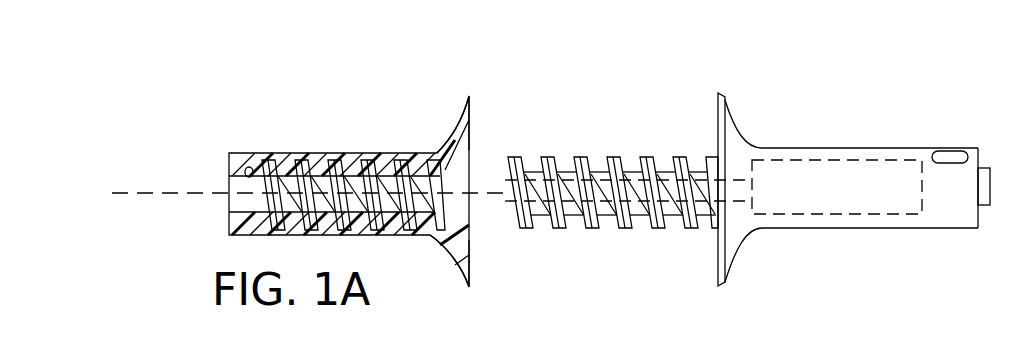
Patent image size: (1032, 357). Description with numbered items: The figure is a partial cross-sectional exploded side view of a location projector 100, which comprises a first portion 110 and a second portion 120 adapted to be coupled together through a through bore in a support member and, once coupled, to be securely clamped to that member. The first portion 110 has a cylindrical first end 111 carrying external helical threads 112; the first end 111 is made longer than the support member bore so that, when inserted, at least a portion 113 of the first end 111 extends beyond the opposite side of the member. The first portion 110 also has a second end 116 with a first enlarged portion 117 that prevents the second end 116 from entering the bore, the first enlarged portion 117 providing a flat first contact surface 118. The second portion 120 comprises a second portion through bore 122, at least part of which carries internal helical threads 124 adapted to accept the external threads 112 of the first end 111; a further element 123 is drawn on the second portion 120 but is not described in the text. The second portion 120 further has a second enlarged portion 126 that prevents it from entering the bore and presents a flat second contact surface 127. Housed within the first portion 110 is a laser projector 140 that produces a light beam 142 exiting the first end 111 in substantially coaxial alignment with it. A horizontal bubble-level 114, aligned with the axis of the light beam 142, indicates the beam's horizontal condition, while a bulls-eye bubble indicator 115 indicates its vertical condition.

The location projector 100 is at (584, 86).
The first portion 110 is at (874, 198).
The cylindrical first end 111 is at (502, 206).
The external helical threads 112 is at (615, 221).
The portion of the first end 113 is at (524, 229).
The horizontal bubble-level 114 is at (948, 157).
The bulls-eye bubble indicator 115 is at (990, 190).
The second end 116 is at (840, 229).
The first enlarged portion 117 is at (738, 250).
The flat first contact surface 118 is at (717, 120).
The second portion 120 is at (320, 153).
The second portion through bore 122 is at (250, 166).
The internal threads 123 is at (383, 160).
The internal helical threads 124 is at (421, 158).
The second enlarged portion 126 is at (452, 258).
The flat second contact surface 127 is at (472, 262).
The laser projector 140 is at (904, 215).
The light beam 142 is at (486, 190).